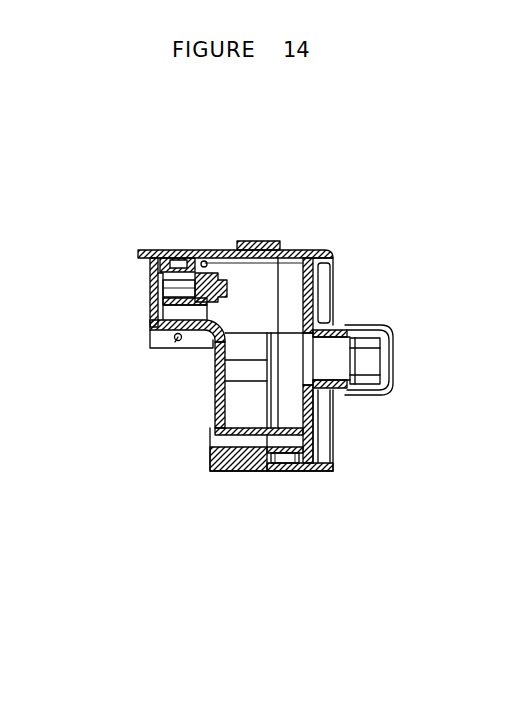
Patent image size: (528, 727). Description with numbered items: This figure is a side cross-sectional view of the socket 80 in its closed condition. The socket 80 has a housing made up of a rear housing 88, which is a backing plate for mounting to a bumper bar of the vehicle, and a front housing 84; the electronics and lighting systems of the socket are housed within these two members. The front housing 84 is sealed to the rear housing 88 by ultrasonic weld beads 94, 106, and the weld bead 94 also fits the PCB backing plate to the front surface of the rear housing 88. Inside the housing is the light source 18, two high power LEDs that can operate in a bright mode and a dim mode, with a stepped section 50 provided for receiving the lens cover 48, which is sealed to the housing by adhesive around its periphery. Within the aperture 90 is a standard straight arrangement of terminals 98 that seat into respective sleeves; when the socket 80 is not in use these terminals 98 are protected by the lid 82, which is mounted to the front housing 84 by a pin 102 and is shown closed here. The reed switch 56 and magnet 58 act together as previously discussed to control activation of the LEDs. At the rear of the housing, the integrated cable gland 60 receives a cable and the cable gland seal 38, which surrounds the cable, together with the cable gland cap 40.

The socket 80 is at (366, 229).
The ultrasonic weld bead 94 is at (283, 255).
The ultrasonic weld bead 106 is at (258, 217).
The magnet 58 is at (173, 262).
The reed switch 56 is at (207, 262).
The lid 82 is at (150, 267).
The terminals 98 is at (158, 322).
The aperture 90 is at (150, 328).
The pin 102 is at (182, 345).
The lens cover 48 is at (215, 437).
The stepped section 50 is at (212, 415).
The light source 18 is at (244, 406).
The front housing 84 is at (228, 456).
The integrated cable gland 60 is at (333, 392).
The rear housing 88 is at (313, 476).
The cable gland seal 38 is at (370, 336).
The cable gland cap 40 is at (391, 362).